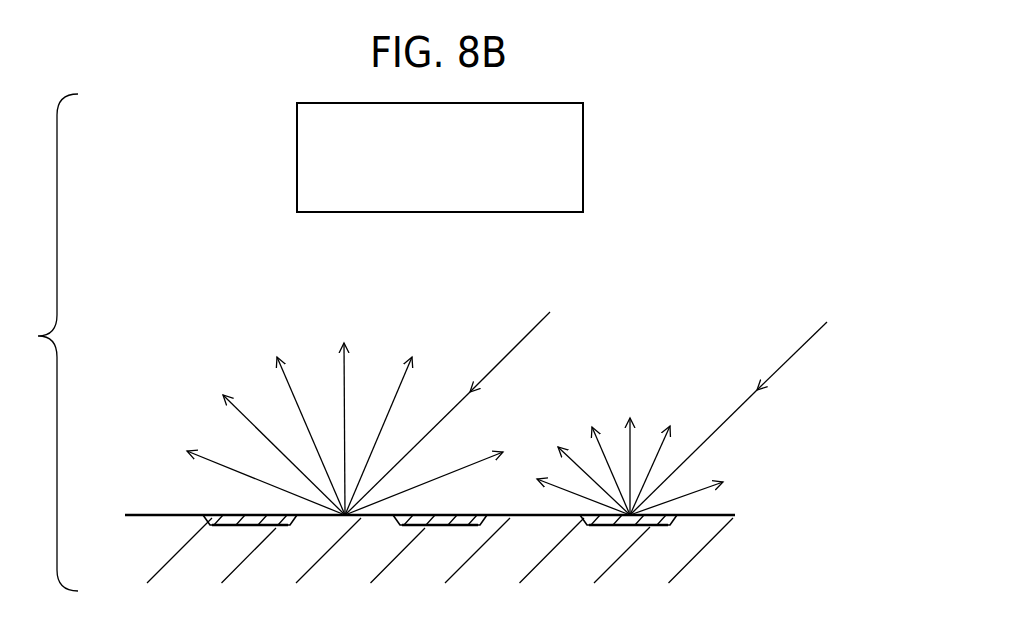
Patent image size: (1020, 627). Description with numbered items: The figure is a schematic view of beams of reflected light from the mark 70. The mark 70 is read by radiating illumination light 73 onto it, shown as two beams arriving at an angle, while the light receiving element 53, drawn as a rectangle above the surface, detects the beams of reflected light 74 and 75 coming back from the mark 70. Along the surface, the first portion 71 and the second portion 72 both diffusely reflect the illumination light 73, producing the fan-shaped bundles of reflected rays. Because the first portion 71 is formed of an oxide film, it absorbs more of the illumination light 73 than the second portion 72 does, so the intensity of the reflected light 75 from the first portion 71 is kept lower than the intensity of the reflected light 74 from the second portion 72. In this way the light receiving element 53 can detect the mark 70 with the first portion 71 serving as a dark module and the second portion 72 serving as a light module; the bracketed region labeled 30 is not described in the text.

The recording medium 30 is at (150, 527).
The light receiving element 53 is at (550, 153).
The mark 70 is at (616, 332).
The first portion 71 is at (470, 515).
The second portion 72 is at (180, 516).
The illumination light 73 is at (510, 347).
The reflected light 74 is at (245, 415).
The reflected light 75 is at (700, 495).